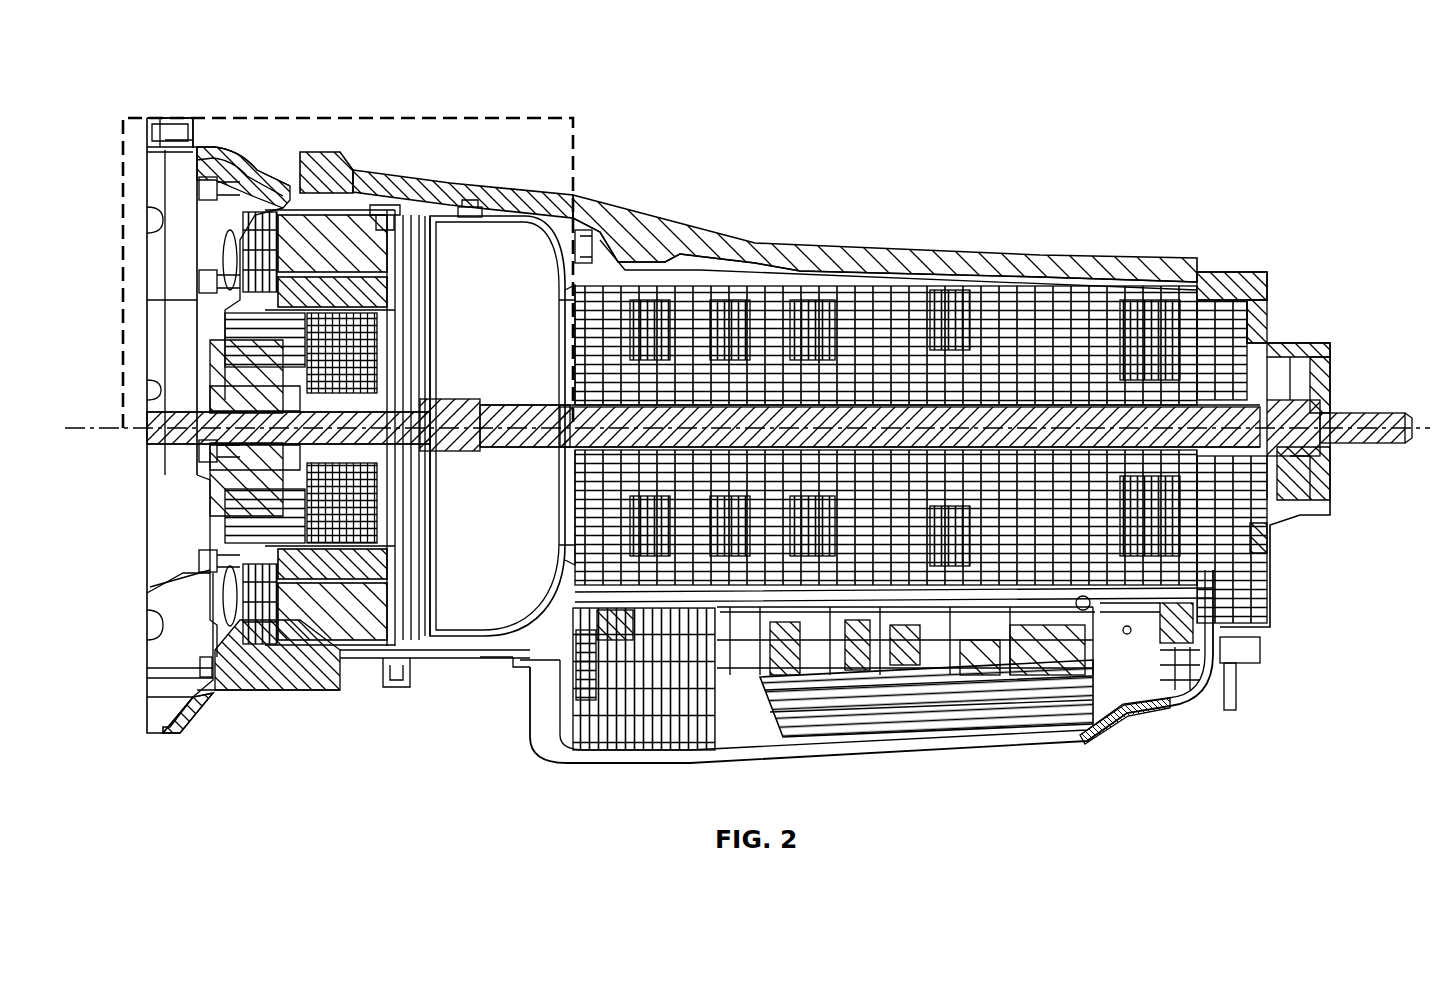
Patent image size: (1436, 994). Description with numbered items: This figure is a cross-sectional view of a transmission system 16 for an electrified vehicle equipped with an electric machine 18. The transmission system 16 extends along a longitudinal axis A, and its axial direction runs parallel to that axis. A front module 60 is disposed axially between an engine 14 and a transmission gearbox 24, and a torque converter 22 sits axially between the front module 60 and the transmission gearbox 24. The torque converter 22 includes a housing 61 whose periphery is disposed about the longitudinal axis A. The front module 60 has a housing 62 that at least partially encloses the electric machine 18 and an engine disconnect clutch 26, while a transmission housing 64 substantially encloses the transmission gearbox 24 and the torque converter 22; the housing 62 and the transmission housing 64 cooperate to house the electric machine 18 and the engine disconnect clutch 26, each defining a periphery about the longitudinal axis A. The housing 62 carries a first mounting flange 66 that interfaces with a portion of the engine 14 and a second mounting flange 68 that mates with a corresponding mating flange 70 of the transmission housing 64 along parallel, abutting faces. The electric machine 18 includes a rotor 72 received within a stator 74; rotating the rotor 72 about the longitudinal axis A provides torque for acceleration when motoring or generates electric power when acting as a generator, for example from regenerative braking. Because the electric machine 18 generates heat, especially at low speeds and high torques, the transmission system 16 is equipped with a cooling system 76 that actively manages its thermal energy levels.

The engine 14 is at (110, 241).
The transmission system 16 is at (1074, 106).
The electric machine 18 is at (345, 182).
The torque converter 22 is at (553, 244).
The transmission gearbox 24 is at (1134, 252).
The engine disconnect clutch 26 is at (215, 468).
The front module 60 is at (273, 160).
The housing 61 is at (472, 219).
The housing 62 is at (230, 157).
The transmission housing 64 is at (665, 258).
The first mounting flange 66 is at (153, 120).
The second mounting flange 68 is at (297, 170).
The mating flange 70 is at (332, 228).
The rotor 72 is at (300, 293).
The stator 74 is at (300, 237).
The cooling system 76 is at (386, 203).
The longitudinal axis A is at (93, 436).